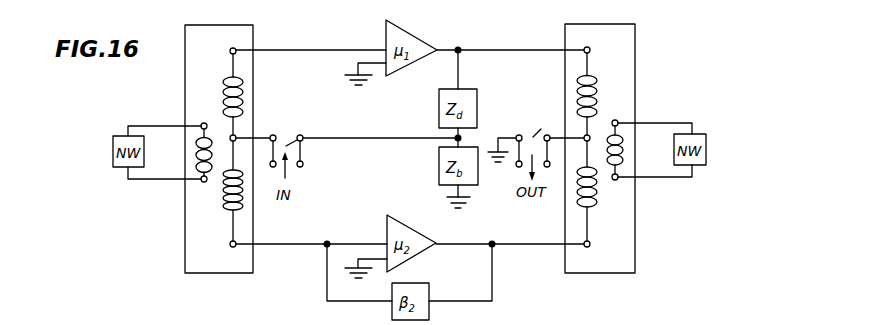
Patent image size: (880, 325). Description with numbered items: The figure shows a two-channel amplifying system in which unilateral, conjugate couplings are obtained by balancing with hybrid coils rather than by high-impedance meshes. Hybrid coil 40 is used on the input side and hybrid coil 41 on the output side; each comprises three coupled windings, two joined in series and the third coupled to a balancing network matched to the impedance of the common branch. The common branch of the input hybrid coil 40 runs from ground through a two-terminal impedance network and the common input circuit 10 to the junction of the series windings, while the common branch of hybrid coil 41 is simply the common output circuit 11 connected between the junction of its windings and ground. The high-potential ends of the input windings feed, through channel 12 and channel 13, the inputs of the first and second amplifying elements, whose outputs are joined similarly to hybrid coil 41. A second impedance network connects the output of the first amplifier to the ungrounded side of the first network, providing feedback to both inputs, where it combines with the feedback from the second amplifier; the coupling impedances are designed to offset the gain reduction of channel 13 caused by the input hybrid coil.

The common input circuit 10 is at (303, 151).
The common output circuit 11 is at (546, 118).
The channel 12 is at (302, 50).
The channel 13 is at (290, 244).
The hybrid coil 40 is at (190, 223).
The hybrid coil 41 is at (628, 225).